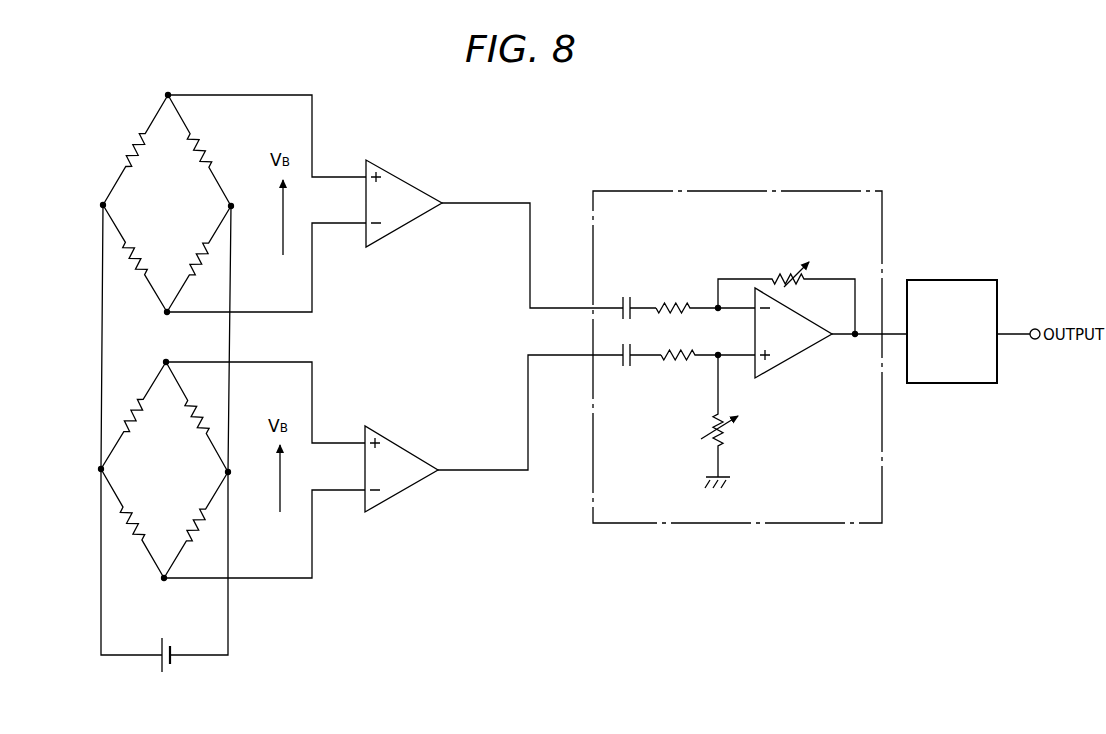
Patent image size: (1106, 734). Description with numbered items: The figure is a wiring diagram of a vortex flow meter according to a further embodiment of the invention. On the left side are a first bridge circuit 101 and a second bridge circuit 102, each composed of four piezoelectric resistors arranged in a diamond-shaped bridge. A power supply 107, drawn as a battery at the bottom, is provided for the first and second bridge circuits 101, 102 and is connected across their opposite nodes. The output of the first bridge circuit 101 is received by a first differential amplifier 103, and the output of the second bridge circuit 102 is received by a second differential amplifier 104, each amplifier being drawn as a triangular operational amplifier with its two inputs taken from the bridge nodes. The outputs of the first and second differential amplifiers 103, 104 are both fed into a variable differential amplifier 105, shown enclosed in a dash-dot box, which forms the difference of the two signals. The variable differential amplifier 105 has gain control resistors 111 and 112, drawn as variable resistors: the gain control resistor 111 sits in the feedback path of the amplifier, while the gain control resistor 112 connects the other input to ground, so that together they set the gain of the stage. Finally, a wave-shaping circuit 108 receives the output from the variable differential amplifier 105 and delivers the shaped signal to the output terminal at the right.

The first bridge circuit 101 is at (124, 146).
The second bridge circuit 102 is at (131, 401).
The first differential amplifier 103 is at (407, 178).
The second differential amplifier 104 is at (408, 450).
The variable differential amplifier 105 is at (737, 190).
The power supply 107 is at (167, 638).
The wave-shaping circuit 108 is at (952, 280).
The gain control resistor 111 is at (782, 272).
The gain control resistor 112 is at (730, 433).